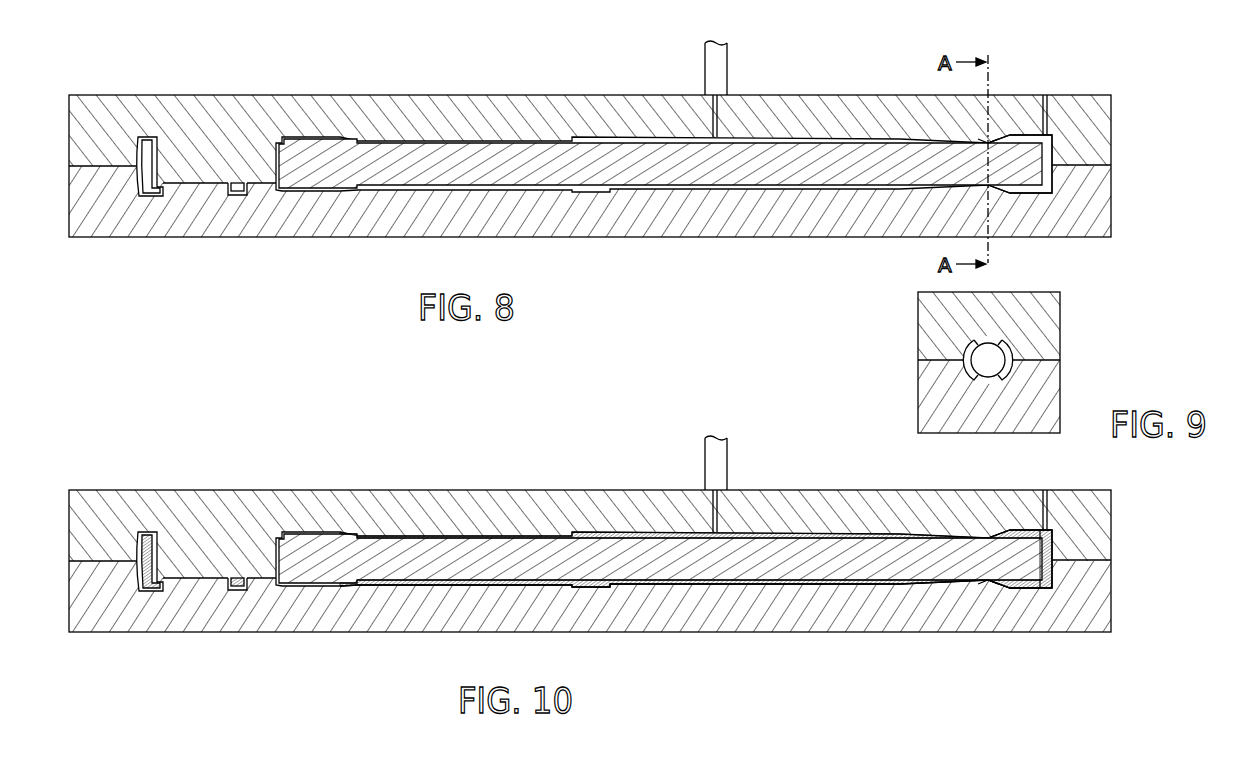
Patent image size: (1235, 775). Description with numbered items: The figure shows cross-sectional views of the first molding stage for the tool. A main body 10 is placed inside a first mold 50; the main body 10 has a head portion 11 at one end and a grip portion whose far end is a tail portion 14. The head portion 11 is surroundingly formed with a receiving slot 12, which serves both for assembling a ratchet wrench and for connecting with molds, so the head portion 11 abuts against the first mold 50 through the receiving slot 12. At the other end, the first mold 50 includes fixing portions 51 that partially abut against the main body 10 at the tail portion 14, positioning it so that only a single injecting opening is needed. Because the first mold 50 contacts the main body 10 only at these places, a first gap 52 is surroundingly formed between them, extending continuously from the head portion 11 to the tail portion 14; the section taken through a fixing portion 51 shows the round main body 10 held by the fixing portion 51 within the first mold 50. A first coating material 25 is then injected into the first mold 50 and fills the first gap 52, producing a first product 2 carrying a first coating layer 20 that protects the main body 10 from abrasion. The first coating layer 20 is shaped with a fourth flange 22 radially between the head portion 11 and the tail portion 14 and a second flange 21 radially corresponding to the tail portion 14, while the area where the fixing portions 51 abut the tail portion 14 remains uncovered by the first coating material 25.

In FIG. 10, the first product 2 is at (690, 637).
In FIG. 8, the main body 10 is at (353, 138).
In FIG. 9, the main body 10 is at (993, 360).
In FIG. 10, the main body 10 is at (660, 558).
In FIG. 8, the head portion 11 is at (138, 146).
In FIG. 8, the receiving slot 12 is at (199, 157).
In FIG. 10, the receiving slot 12 is at (219, 510).
In FIG. 8, the tail portion 14 is at (986, 143).
In FIG. 10, the tail portion 14 is at (1015, 635).
In FIG. 10, the first coating layer 20 is at (664, 504).
In FIG. 10, the second flange 21 is at (1072, 610).
In FIG. 10, the fourth flange 22 is at (690, 633).
In FIG. 10, the first coating material 25 is at (690, 484).
In FIG. 8, the first mold 50 is at (464, 95).
In FIG. 9, the first mold 50 is at (928, 318).
In FIG. 10, the first mold 50 is at (590, 518).
In FIG. 8, the fixing portion 51 is at (991, 144).
In FIG. 9, the fixing portion 51 is at (1000, 343).
In FIG. 10, the fixing portion 51 is at (1011, 610).
In FIG. 8, the first gap 52 is at (810, 137).